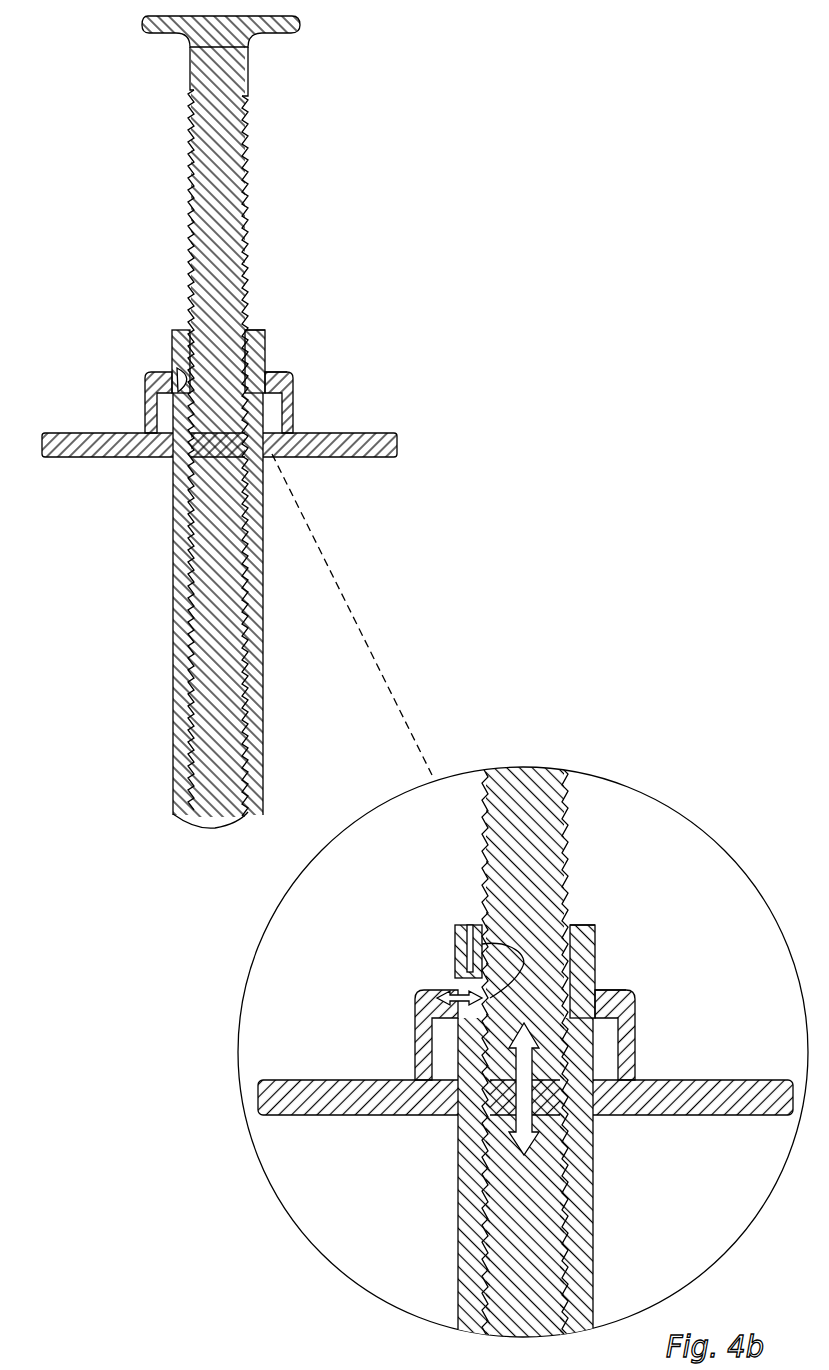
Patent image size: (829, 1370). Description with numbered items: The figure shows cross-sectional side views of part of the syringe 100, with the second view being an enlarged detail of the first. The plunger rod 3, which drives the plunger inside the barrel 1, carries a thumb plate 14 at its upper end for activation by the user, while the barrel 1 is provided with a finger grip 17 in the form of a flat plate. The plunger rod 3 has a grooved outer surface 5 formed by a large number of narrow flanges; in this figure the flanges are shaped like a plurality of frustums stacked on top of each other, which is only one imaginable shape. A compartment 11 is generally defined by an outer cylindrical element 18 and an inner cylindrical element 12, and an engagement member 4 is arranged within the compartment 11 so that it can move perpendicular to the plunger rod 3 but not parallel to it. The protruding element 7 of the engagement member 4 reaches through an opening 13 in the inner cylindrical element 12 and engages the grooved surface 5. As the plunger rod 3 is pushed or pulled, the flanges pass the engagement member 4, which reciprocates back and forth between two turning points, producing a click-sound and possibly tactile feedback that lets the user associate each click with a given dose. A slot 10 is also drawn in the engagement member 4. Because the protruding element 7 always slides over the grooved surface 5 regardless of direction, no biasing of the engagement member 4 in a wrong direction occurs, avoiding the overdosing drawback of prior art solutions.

In FIG. 4A, the syringe 100 is at (104, 112).
In FIG. 4A, the barrel 1 is at (265, 683).
In FIG. 4B, the barrel 1 is at (592, 1220).
In FIG. 4A, the plunger rod 3 is at (250, 411).
In FIG. 4B, the plunger rod 3 is at (560, 1055).
In FIG. 4A, the engagement member 4 is at (218, 328).
In FIG. 4B, the engagement member 4 is at (526, 936).
In FIG. 4A, the grooved outer surface 5 is at (246, 170).
In FIG. 4B, the grooved outer surface 5 is at (568, 798).
In FIG. 4A, the protruding element 7 is at (234, 382).
In FIG. 4B, the protruding element 7 is at (541, 1062).
In FIG. 4B, the slot 10 is at (468, 925).
In FIG. 4A, the compartment 11 is at (272, 376).
In FIG. 4B, the compartment 11 is at (605, 995).
In FIG. 4A, the inner cylindrical element 12 is at (254, 330).
In FIG. 4B, the inner cylindrical element 12 is at (580, 920).
In FIG. 4B, the opening 13 is at (512, 978).
In FIG. 4A, the thumb plate 14 is at (296, 20).
In FIG. 4A, the finger grip 17 is at (398, 446).
In FIG. 4B, the finger grip 17 is at (718, 1090).
In FIG. 4A, the outer cylindrical element 18 is at (296, 404).
In FIG. 4B, the outer cylindrical element 18 is at (635, 1020).